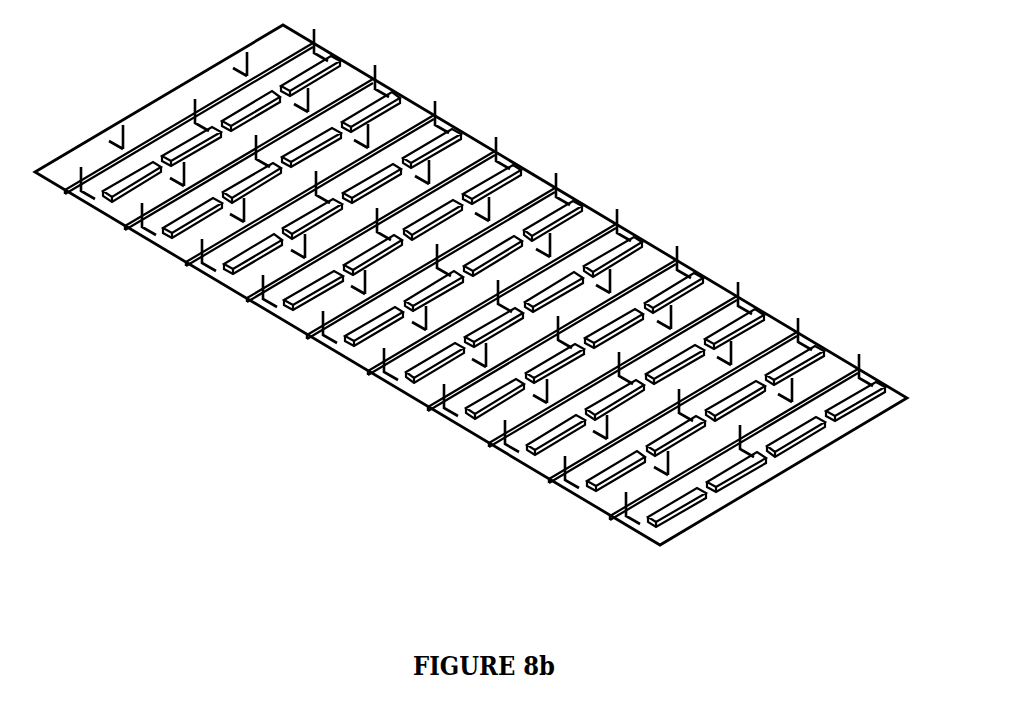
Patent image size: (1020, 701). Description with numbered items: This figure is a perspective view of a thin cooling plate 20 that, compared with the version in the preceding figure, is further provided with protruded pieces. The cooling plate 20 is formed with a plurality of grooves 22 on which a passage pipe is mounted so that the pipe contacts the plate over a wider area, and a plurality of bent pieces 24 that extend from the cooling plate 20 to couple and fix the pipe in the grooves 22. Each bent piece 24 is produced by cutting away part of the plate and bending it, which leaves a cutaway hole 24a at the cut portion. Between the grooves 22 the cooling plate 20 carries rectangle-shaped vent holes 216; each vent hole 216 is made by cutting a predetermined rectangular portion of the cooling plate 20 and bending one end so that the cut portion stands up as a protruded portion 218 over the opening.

The cooling plate 20 is at (771, 478).
The grooves 22 is at (549, 481).
The bent piece 24 is at (672, 480).
The cutaway hole 24a is at (440, 418).
The vent hole 216 is at (718, 280).
The louvers 218 is at (660, 292).